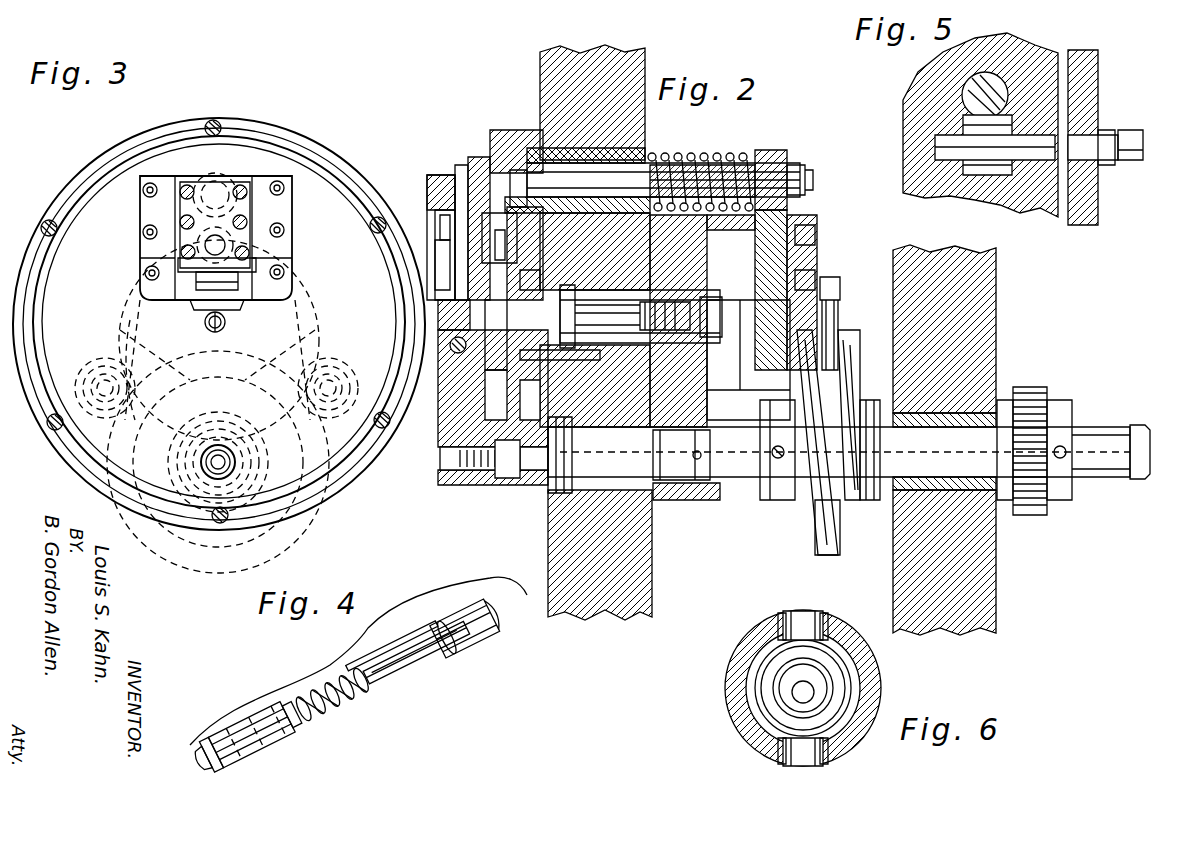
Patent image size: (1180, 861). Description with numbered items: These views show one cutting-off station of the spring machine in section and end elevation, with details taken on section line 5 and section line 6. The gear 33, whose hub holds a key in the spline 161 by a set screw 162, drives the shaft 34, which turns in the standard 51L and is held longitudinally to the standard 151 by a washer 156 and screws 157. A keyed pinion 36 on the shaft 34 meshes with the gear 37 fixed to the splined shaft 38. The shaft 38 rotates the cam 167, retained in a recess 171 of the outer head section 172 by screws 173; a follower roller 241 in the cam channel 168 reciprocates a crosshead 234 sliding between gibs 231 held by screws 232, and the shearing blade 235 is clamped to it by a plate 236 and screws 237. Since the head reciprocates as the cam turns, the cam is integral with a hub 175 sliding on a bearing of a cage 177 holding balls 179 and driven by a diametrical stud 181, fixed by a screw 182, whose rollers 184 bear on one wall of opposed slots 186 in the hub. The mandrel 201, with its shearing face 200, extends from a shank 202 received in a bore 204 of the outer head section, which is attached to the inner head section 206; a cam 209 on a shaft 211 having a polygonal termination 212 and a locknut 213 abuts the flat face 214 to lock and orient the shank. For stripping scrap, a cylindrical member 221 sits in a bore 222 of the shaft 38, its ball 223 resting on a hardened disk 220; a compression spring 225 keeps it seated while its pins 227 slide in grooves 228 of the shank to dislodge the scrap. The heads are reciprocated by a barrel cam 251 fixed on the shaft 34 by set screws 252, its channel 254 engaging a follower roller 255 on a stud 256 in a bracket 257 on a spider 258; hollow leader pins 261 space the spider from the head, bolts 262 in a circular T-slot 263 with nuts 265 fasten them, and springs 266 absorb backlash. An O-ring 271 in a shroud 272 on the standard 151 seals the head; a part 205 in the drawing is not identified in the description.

In FIG. 2, the section line 5— 5 is at (441, 265).
In FIG. 2, the section line 6— 6 is at (520, 277).
In FIG. 2, the gear 33 is at (1028, 385).
In FIG. 2, the shaft 34 is at (1105, 425).
In FIG. 2, the pinion 36 is at (680, 503).
In FIG. 2, the gear 37 is at (685, 397).
In FIG. 2, the splined shaft 38 is at (630, 318).
In FIG. 6, the splined shaft 38 is at (840, 667).
In FIG. 2, the standard 51L is at (978, 603).
In FIG. 2, the standard 151 is at (680, 598).
In FIG. 2, the washer 156 is at (575, 485).
In FIG. 2, the screw 157 is at (655, 490).
In FIG. 2, the spline 161 is at (1085, 455).
In FIG. 2, the set screw 162 is at (1075, 480).
In FIG. 2, the cam 167 is at (490, 215).
In FIG. 3, the cam channel 168 is at (135, 296).
In FIG. 2, the cam channel 168 is at (484, 232).
In FIG. 2, the recess 171 is at (520, 485).
In FIG. 2, the outer head section 172 is at (470, 490).
In FIG. 3, the screws 173 is at (228, 470).
In FIG. 2, the screws 173 is at (440, 490).
In FIG. 2, the hub 175 is at (575, 275).
In FIG. 6, the hub 175 is at (745, 637).
In FIG. 2, the cage 177 is at (578, 290).
In FIG. 6, the cage 177 is at (755, 688).
In FIG. 6, the ball bearing 179 is at (760, 730).
In FIG. 2, the diametrical stud 181 is at (600, 310).
In FIG. 6, the diametrical stud 181 is at (845, 625).
In FIG. 2, the screw 182 is at (607, 325).
In FIG. 2, the roller 184 is at (595, 375).
In FIG. 6, the roller 184 is at (840, 775).
In FIG. 6, the slots 186 is at (780, 760).
In FIG. 3, the shearing face 200 is at (210, 350).
In FIG. 4, the shearing face 200 is at (201, 765).
In FIG. 3, the mandrel 201 is at (205, 330).
In FIG. 2, the mandrel 201 is at (445, 380).
In FIG. 4, the mandrel 201 is at (215, 775).
In FIG. 4, the shank 202 is at (258, 750).
In FIG. 5, the shank 202 is at (972, 95).
In FIG. 2, the bore 204 is at (432, 215).
In FIG. 5, the bore 204 is at (1020, 62).
In FIG. 2, the pin 205 is at (440, 455).
In FIG. 5, the pin 205 is at (1030, 195).
In FIG. 2, the inner head section 206 is at (505, 485).
In FIG. 5, the cam 209 is at (978, 165).
In FIG. 2, the shaft 211 is at (462, 403).
In FIG. 5, the shaft 211 is at (1058, 160).
In FIG. 5, the polygonal termination 212 is at (1130, 162).
In FIG. 5, the locknut 213 is at (1105, 130).
In FIG. 5, the flat face 214 is at (965, 128).
In FIG. 2, the hardened disk 220 is at (578, 358).
In FIG. 2, the cylindrical member 221 is at (485, 442).
In FIG. 4, the cylindrical member 221 is at (502, 640).
In FIG. 6, the bore 222 is at (799, 685).
In FIG. 4, the ball 223 is at (530, 600).
In FIG. 4, the compression spring 225 is at (345, 710).
In FIG. 4, the pins 227 is at (415, 676).
In FIG. 4, the longitudinal grooves 228 is at (300, 728).
In FIG. 3, the gibs 231 is at (258, 178).
In FIG. 2, the gibs 231 is at (430, 178).
In FIG. 3, the screws 232 is at (280, 182).
In FIG. 3, the crosshead 234 is at (182, 248).
In FIG. 2, the crosshead 234 is at (460, 168).
In FIG. 3, the movable shearing blade 235 is at (240, 284).
In FIG. 2, the movable shearing blade 235 is at (430, 175).
In FIG. 3, the plate 236 is at (245, 208).
In FIG. 2, the plate 236 is at (430, 160).
In FIG. 3, the screws 237 is at (250, 232).
In FIG. 3, the follower roller 241 is at (260, 262).
In FIG. 2, the follower roller 241 is at (548, 250).
In FIG. 2, the barrel cam 251 is at (812, 540).
In FIG. 2, the set screws 252 is at (778, 460).
In FIG. 2, the channel 254 is at (815, 560).
In FIG. 2, the follower roller 255 is at (855, 395).
In FIG. 2, the stud 256 is at (842, 290).
In FIG. 2, the bracket 257 is at (818, 255).
In FIG. 3, the spider 258 is at (98, 345).
In FIG. 2, the spider 258 is at (770, 153).
In FIG. 2, the hollow leader pins 261 is at (733, 157).
In FIG. 2, the bolts 262 is at (682, 143).
In FIG. 2, the circular T-slot 263 is at (528, 420).
In FIG. 2, the nuts 265 is at (838, 180).
In FIG. 2, the springs 266 is at (690, 210).
In FIG. 2, the O-ring 271 is at (517, 165).
In FIG. 2, the shroud 272 is at (545, 148).